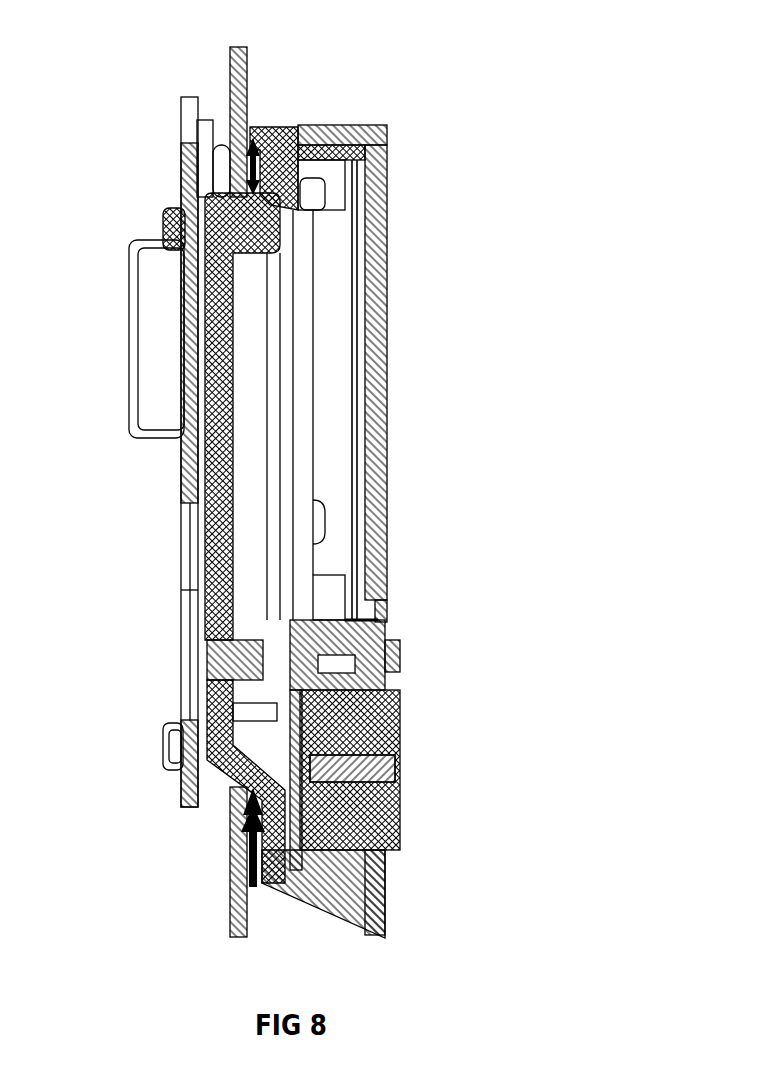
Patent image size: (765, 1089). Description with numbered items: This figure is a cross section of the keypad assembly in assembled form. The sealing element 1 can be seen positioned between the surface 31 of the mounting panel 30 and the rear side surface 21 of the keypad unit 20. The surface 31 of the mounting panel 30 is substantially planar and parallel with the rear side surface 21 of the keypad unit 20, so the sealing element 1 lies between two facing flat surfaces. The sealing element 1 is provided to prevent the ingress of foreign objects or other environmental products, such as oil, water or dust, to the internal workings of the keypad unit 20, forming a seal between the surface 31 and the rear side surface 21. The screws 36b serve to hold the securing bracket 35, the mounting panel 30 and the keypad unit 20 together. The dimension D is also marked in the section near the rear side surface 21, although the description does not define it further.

The sealing element 1 is at (256, 887).
The keypad unit 20 is at (307, 912).
The rear side surface 21 is at (262, 148).
The mounting panel 30 is at (232, 918).
The surface 31 is at (245, 82).
The securing bracket 35 is at (187, 470).
The screws 36b is at (162, 753).
The gap distance D is at (217, 152).